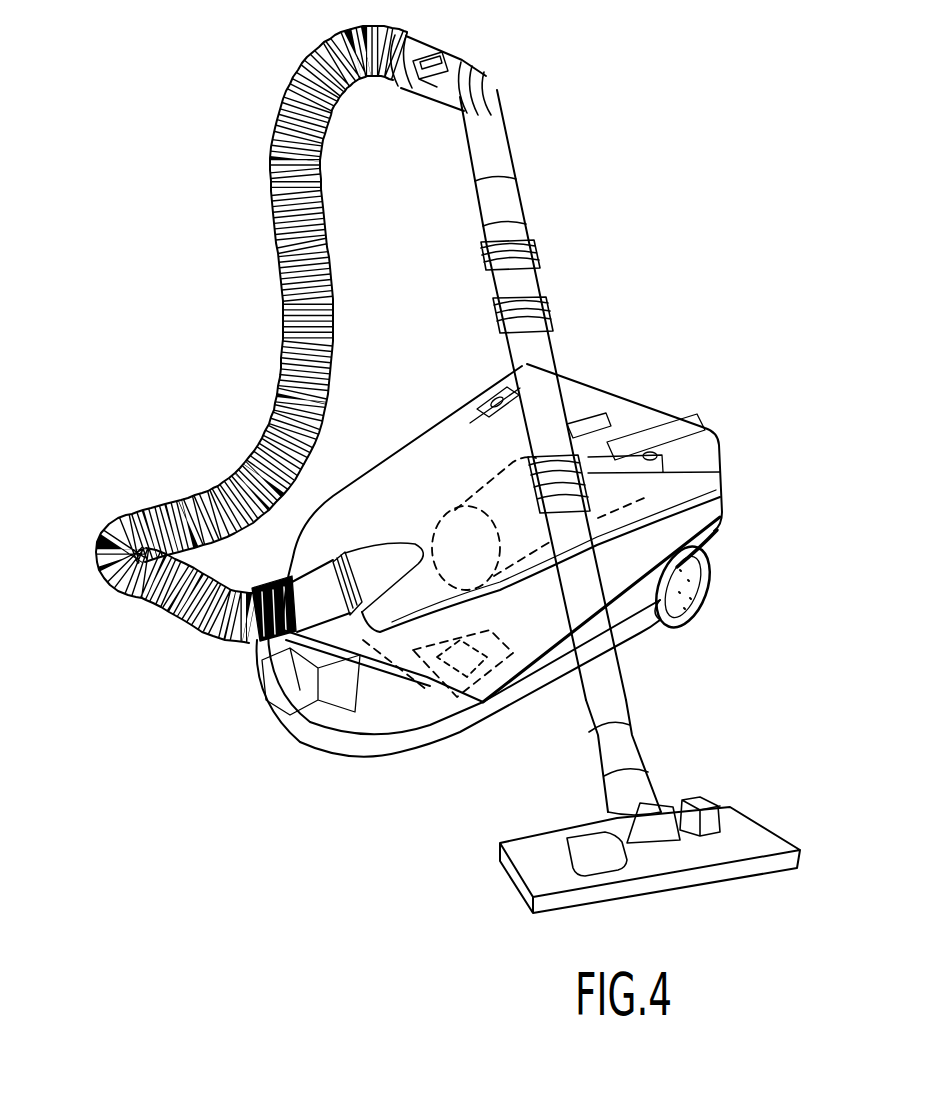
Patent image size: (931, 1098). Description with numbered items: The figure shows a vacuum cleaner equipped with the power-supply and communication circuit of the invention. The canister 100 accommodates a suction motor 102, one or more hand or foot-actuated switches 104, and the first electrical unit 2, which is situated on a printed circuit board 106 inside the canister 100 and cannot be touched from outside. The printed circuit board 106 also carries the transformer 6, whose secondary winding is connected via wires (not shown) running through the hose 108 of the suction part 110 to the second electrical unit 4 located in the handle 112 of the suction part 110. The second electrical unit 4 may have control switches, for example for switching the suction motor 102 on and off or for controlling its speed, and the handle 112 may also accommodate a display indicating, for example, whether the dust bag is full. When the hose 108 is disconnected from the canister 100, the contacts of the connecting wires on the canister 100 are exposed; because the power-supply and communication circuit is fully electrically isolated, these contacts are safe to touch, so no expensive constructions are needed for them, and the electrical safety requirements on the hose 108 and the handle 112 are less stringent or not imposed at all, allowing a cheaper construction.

The canister 100 is at (489, 560).
The suction motor 102 is at (478, 493).
The hand or foot-actuated switch 104 is at (663, 425).
The printed circuit board 106 is at (398, 683).
The hose 108 is at (283, 304).
The suction part 110 is at (552, 353).
The handle 112 is at (443, 63).
The first electrical unit 2 is at (483, 652).
The second electrical unit 4 is at (430, 82).
The transformer 6 is at (437, 625).